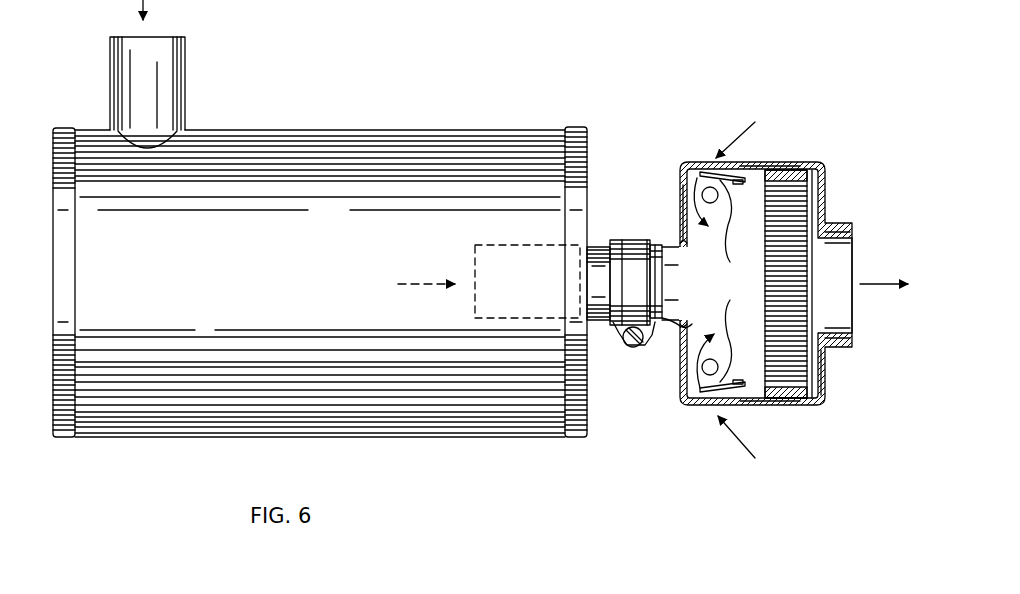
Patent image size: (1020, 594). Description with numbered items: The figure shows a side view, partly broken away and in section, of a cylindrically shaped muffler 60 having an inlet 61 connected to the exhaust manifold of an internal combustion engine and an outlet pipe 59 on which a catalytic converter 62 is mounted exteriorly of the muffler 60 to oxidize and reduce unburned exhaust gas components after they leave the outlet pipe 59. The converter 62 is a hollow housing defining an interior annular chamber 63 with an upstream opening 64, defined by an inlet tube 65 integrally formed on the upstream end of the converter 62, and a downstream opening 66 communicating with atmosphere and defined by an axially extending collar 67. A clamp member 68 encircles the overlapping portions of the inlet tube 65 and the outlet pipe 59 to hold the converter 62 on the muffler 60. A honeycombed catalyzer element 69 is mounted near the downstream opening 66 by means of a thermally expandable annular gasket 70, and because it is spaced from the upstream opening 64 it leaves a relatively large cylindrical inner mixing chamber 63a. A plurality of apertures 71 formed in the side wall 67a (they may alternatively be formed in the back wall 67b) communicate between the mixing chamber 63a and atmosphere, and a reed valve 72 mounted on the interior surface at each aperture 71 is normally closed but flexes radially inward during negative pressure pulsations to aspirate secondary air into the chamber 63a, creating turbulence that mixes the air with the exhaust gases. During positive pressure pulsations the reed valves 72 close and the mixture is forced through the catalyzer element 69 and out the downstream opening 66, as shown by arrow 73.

The outlet pipe 59 is at (600, 245).
The muffler 60 is at (285, 283).
The inlet 61 is at (185, 70).
The catalytic converter 62 is at (822, 160).
The interior annular chamber 63 is at (812, 193).
The inner mixing chamber 63a is at (835, 247).
The upstream opening 64 is at (678, 325).
The inlet tube 65 is at (663, 250).
The downstream opening 66 is at (850, 330).
The collar 67 is at (843, 348).
The side wall 67a is at (782, 162).
The back wall 67b is at (683, 182).
The clamp member 68 is at (632, 348).
The catalyzer element 69 is at (802, 278).
The annular gasket 70 is at (812, 406).
The apertures 71 is at (705, 168).
The reed valve 72 is at (724, 290).
The arrow 73 is at (883, 287).